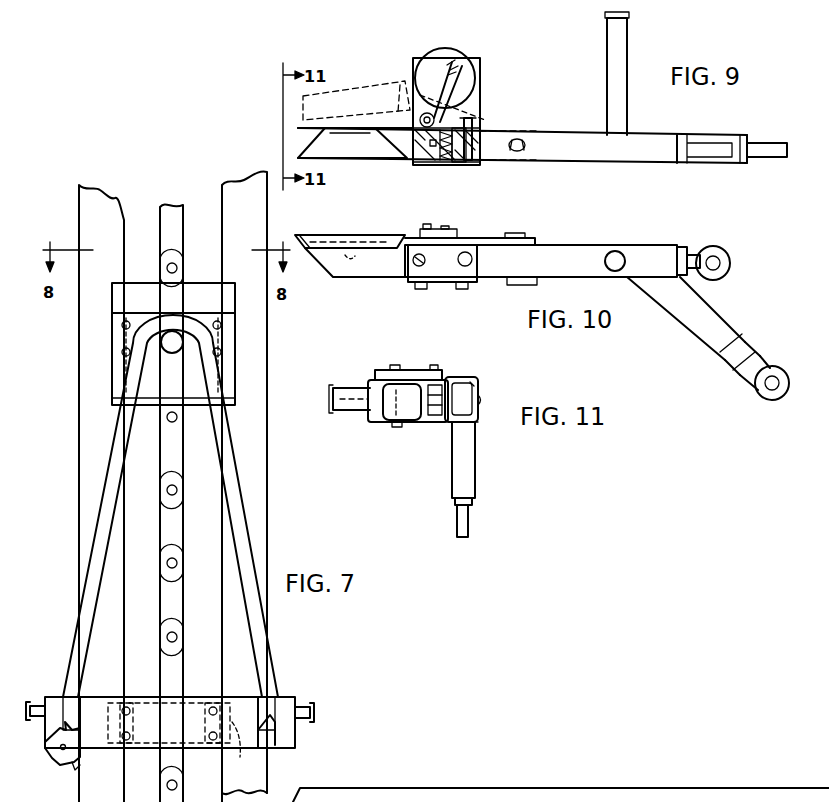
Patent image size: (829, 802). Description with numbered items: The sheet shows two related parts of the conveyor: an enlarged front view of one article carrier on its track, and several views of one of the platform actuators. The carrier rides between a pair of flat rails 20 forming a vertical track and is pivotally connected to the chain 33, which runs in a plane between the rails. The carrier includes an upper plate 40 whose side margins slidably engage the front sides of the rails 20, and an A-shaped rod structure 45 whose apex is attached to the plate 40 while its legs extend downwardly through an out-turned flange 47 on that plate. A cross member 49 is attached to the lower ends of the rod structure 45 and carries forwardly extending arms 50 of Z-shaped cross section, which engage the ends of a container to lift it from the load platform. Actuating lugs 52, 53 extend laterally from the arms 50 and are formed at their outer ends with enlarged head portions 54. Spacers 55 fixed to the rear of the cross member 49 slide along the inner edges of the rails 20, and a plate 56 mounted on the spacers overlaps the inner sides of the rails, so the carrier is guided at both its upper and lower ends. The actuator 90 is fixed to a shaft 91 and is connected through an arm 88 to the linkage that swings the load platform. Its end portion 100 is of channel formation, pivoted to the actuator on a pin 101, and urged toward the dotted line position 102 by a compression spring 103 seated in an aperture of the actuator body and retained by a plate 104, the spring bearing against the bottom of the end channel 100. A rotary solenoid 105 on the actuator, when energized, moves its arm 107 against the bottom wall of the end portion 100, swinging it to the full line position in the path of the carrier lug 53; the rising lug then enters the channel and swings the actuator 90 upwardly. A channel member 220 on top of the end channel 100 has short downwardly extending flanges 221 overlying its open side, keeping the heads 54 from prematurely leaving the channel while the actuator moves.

In FIG. 7, the rails 20 is at (82, 452).
In FIG. 7, the chain 33 is at (172, 457).
In FIG. 7, the upper plate 40 is at (230, 334).
In FIG. 7, the A-shaped rod structure 45 is at (248, 560).
In FIG. 7, the out-turned flange 47 is at (168, 395).
In FIG. 7, the cross member 49 is at (97, 697).
In FIG. 7, the arms 50 is at (58, 722).
In FIG. 7, the actuating lug 52 is at (38, 697).
In FIG. 7, the actuating lug 53 is at (300, 707).
In FIG. 7, the enlarged head portions 54 is at (27, 703).
In FIG. 7, the spacers 55 is at (134, 722).
In FIG. 7, the plate 56 is at (239, 750).
In FIG. 10, the arm 88 is at (710, 328).
In FIG. 11, the arm 88 is at (468, 482).
In FIG. 9, the actuator 90 is at (578, 130).
In FIG. 10, the actuator 90 is at (580, 243).
In FIG. 9, the shaft 91 is at (618, 100).
In FIG. 10, the shaft 91 is at (615, 251).
In FIG. 11, the shaft 91 is at (355, 400).
In FIG. 9, the end portion 100 is at (300, 136).
In FIG. 10, the end portion 100 is at (361, 278).
In FIG. 11, the end portion 100 is at (452, 412).
In FIG. 9, the pin 101 is at (517, 138).
In FIG. 10, the pin 101 is at (515, 233).
In FIG. 9, the dotted line position 102 is at (358, 97).
In FIG. 9, the compression spring 103 is at (456, 170).
In FIG. 9, the plate 104 is at (433, 165).
In FIG. 10, the plate 104 is at (446, 280).
In FIG. 9, the rotary solenoid 105 is at (470, 85).
In FIG. 11, the rotary solenoid 105 is at (380, 410).
In FIG. 9, the arm 107 is at (473, 115).
In FIG. 10, the arm 107 is at (437, 230).
In FIG. 11, the arm 107 is at (411, 375).
In FIG. 9, the channel member 220 is at (369, 150).
In FIG. 10, the channel member 220 is at (374, 240).
In FIG. 11, the channel member 220 is at (462, 375).
In FIG. 10, the flanges 221 is at (322, 250).
In FIG. 11, the flanges 221 is at (480, 380).